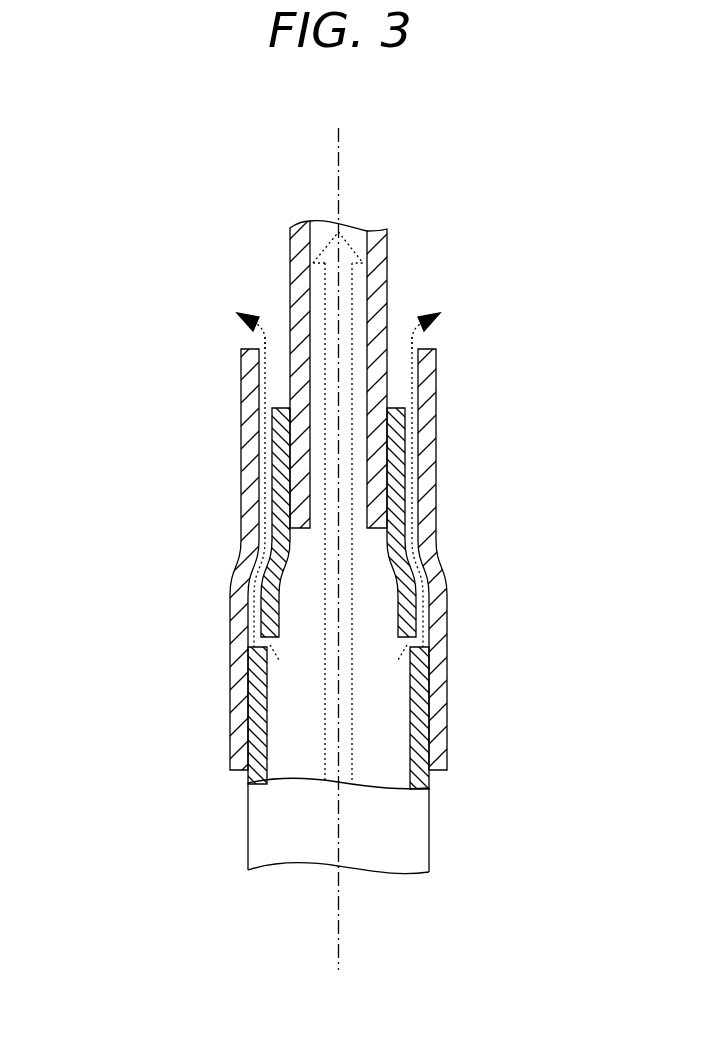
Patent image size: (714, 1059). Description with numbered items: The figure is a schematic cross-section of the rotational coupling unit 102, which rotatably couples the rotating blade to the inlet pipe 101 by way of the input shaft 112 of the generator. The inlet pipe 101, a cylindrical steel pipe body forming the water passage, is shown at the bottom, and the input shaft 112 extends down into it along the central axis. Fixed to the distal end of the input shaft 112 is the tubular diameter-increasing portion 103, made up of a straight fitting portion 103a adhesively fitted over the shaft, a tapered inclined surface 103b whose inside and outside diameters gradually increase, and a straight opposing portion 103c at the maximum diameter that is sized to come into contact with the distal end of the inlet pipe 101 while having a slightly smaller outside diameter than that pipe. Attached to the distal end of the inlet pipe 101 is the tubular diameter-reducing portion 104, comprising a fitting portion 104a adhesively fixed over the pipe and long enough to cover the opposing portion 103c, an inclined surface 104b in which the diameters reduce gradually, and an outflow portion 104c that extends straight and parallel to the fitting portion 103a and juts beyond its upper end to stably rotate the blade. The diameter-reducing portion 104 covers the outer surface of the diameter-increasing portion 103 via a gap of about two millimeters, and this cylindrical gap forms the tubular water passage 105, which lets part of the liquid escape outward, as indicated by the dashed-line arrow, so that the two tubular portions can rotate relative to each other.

The inlet pipe 101 is at (429, 835).
The rotational coupling unit 102 is at (216, 331).
The tubular diameter-increasing portion 103 is at (499, 553).
The fitting portion 103a is at (403, 500).
The inclined surface 103b is at (420, 553).
The opposing portion 103c is at (450, 594).
The tubular diameter-reducing portion 104 is at (158, 553).
The fitting portion 104a is at (228, 596).
The inclined surface 104b is at (233, 556).
The outflow portion 104c is at (242, 459).
The tubular water passage 105 is at (415, 430).
The input shaft 112 is at (291, 256).